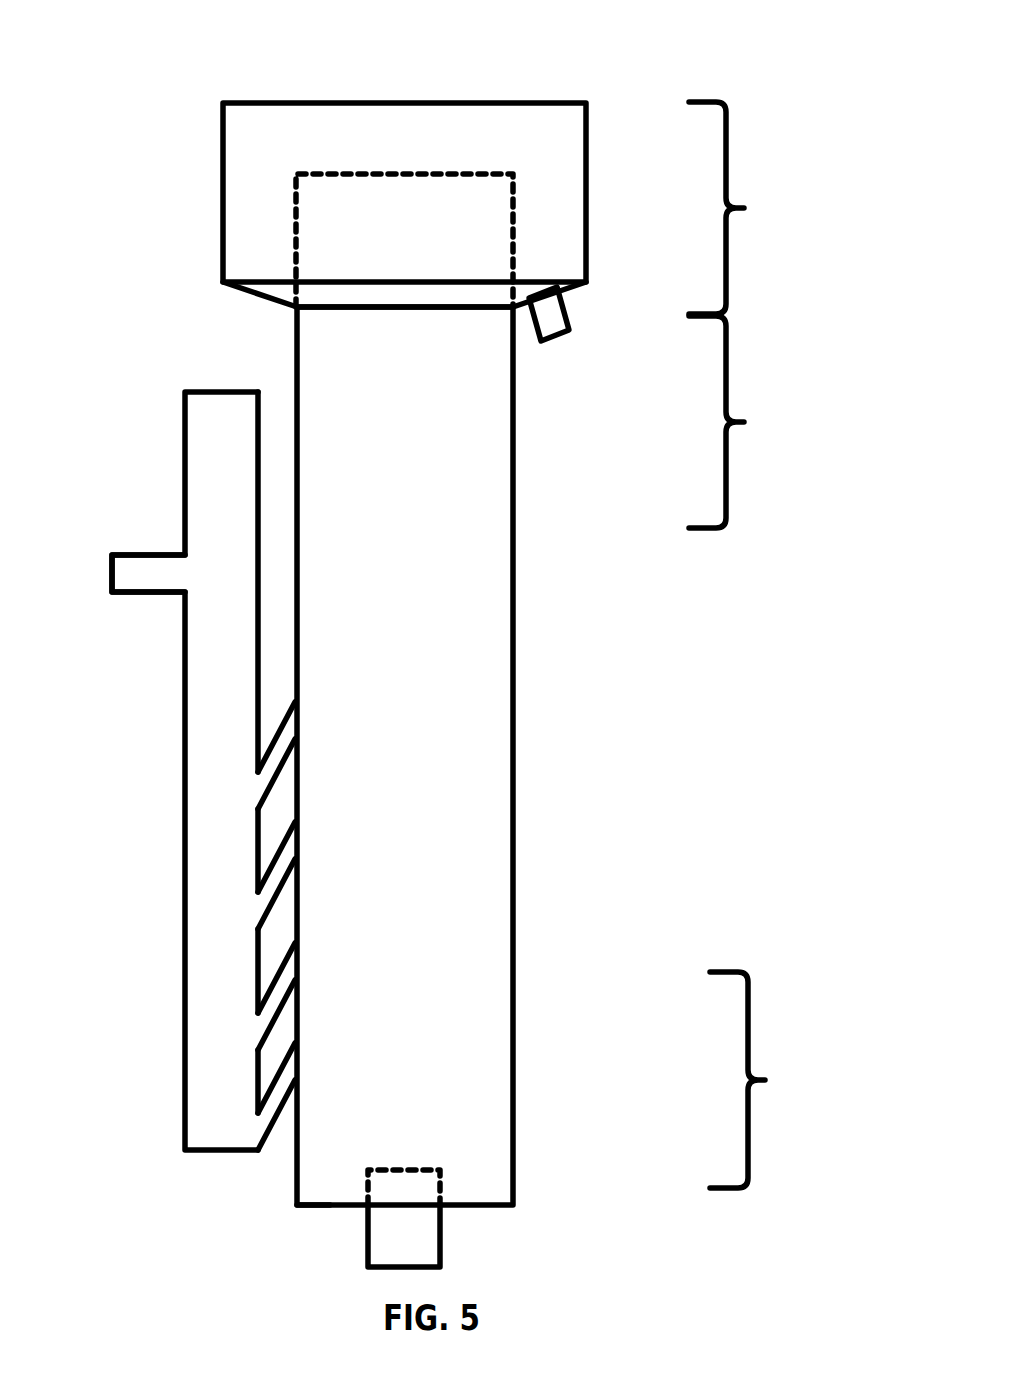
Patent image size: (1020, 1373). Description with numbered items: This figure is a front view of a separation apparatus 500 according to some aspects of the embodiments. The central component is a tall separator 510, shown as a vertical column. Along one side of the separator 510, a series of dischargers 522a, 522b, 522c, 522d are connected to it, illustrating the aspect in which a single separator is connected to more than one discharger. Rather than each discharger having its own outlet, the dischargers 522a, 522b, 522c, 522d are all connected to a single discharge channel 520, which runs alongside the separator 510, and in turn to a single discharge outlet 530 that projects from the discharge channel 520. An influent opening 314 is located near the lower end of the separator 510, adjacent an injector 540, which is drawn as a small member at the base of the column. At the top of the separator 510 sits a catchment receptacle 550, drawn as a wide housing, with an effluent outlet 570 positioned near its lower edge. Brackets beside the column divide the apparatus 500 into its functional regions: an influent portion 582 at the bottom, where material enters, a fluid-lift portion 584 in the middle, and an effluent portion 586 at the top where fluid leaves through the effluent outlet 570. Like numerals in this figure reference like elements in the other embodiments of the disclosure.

The apparatus 500 is at (114, 58).
The separator 510 is at (478, 752).
The discharge channel 520 is at (223, 459).
The discharger 522a is at (258, 777).
The discharger 522b is at (258, 905).
The discharger 522c is at (258, 1035).
The discharger 522d is at (258, 1133).
The discharge outlet 530 is at (132, 569).
The injector 540 is at (422, 1223).
The catchment receptacle 550 is at (242, 207).
The effluent outlet 570 is at (545, 310).
The influent portion 582 is at (765, 1080).
The fluid-lift portion 584 is at (744, 422).
The effluent portion 586 is at (744, 208).
The influent opening 314 is at (327, 1209).